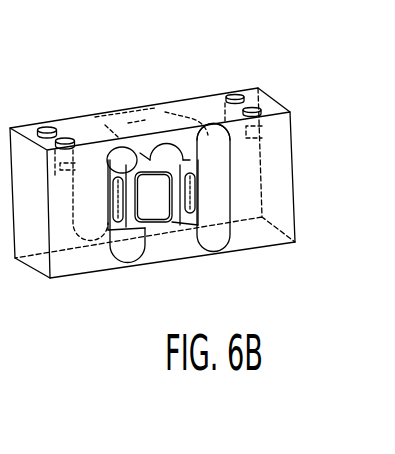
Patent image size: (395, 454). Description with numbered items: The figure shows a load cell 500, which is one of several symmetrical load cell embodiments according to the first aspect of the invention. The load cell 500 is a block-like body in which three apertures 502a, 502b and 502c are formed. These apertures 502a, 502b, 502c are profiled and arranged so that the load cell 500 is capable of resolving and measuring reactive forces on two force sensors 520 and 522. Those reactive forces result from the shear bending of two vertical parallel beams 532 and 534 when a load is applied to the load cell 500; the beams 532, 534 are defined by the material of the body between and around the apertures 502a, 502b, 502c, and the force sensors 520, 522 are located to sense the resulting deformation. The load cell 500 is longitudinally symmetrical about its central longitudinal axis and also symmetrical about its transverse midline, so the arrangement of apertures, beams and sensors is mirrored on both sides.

The load cell 500 is at (169, 68).
The aperture 502a is at (115, 258).
The aperture 502b is at (215, 240).
The aperture 502c is at (163, 212).
The force sensor 520 is at (152, 170).
The force sensor 522 is at (152, 170).
The vertical parallel beam 532 is at (115, 170).
The vertical parallel beam 534 is at (190, 160).